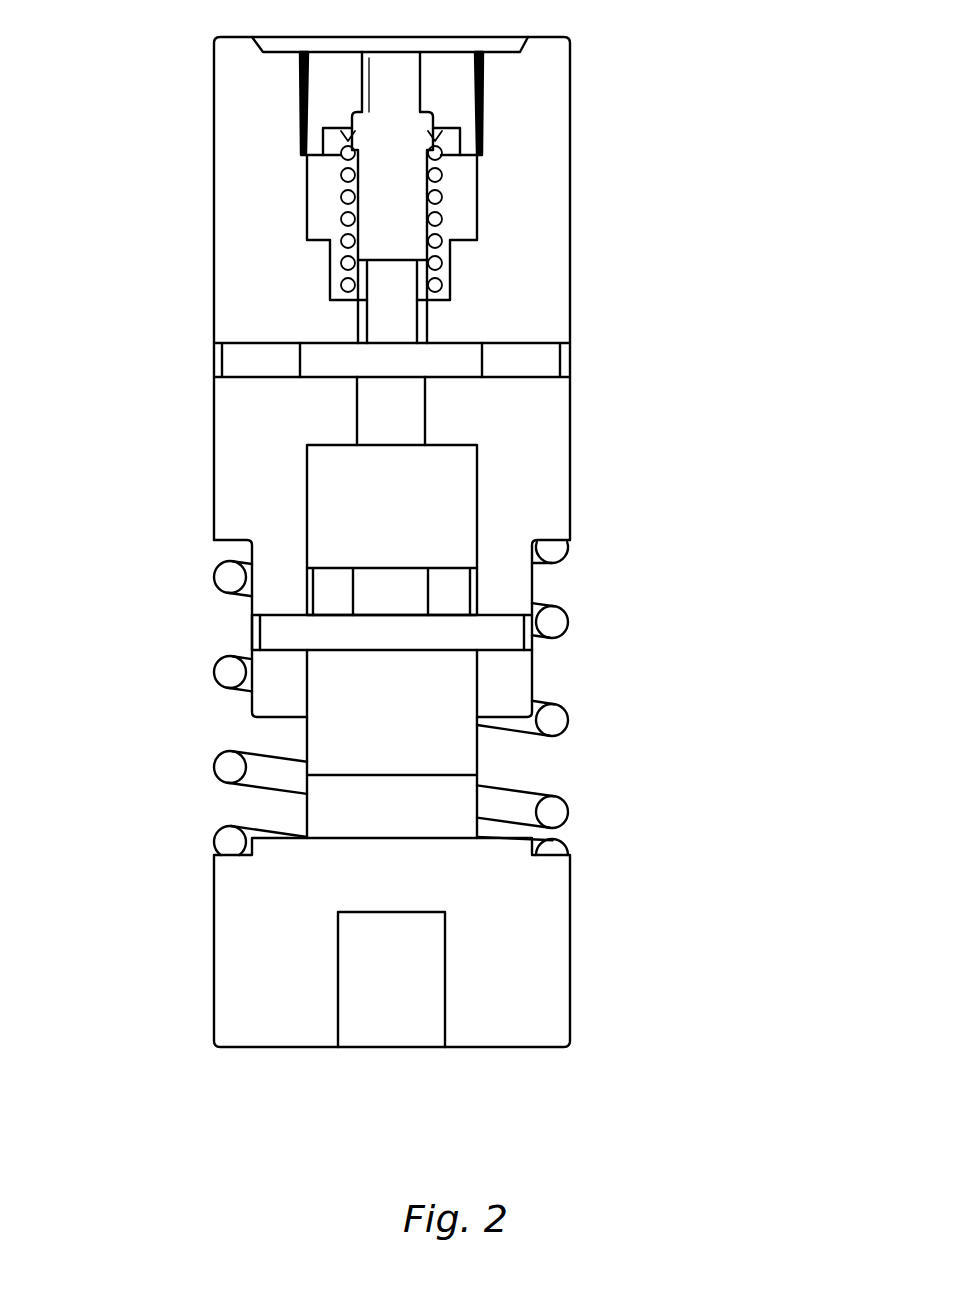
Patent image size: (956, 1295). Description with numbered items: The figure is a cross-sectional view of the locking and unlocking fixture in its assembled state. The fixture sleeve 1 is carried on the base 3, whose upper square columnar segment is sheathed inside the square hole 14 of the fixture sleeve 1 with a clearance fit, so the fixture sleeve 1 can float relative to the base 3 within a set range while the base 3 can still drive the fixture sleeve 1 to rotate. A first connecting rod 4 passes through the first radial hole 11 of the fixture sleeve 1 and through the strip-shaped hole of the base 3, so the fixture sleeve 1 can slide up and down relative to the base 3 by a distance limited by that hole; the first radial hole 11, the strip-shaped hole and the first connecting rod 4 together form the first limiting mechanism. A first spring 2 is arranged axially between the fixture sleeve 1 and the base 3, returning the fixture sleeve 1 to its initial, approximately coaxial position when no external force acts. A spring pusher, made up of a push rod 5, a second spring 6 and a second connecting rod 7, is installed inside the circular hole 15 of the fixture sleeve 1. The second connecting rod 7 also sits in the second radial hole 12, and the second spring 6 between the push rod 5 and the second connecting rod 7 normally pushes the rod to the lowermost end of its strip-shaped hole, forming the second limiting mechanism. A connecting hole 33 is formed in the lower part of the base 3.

The fixture sleeve 1 is at (190, 133).
The first spring 2 is at (224, 667).
The base 3 is at (552, 973).
The first connecting rod 4 is at (430, 635).
The push rod 5 is at (395, 130).
The second spring 6 is at (447, 190).
The second connecting rod 7 is at (455, 355).
The first radial hole 11 is at (254, 617).
The second radial hole 12 is at (270, 358).
The square hole 14 is at (352, 530).
The circular hole 15 is at (372, 410).
The connecting hole 33 is at (383, 1015).